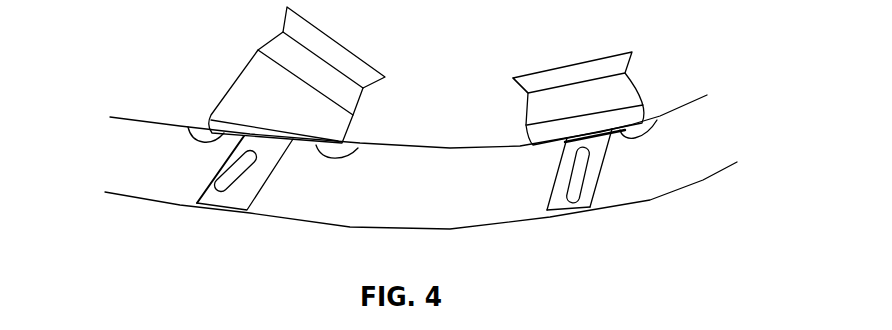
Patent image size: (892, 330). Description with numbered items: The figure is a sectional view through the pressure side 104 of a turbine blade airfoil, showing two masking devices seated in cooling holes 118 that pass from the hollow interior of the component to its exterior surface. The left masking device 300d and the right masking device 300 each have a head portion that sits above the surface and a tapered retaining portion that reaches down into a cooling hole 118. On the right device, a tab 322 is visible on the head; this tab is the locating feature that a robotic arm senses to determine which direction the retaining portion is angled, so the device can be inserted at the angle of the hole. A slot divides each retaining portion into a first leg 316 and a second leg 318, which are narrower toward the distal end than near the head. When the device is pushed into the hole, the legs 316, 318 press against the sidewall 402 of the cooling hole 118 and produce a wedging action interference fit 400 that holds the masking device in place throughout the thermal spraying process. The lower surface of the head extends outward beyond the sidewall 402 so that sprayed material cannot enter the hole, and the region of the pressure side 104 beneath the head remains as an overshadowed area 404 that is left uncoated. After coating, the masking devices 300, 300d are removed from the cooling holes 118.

The pressure side 104 is at (448, 147).
The cooling hole 118 is at (227, 202).
The masking device 300 is at (565, 63).
The masking device 300d is at (251, 82).
The tab 322 is at (522, 98).
The wedging action interference fit 400 is at (405, 187).
The sidewall 402 is at (582, 205).
The first leg 316 is at (253, 181).
The second leg 318 is at (237, 162).
The overshadowed area 404 is at (198, 138).